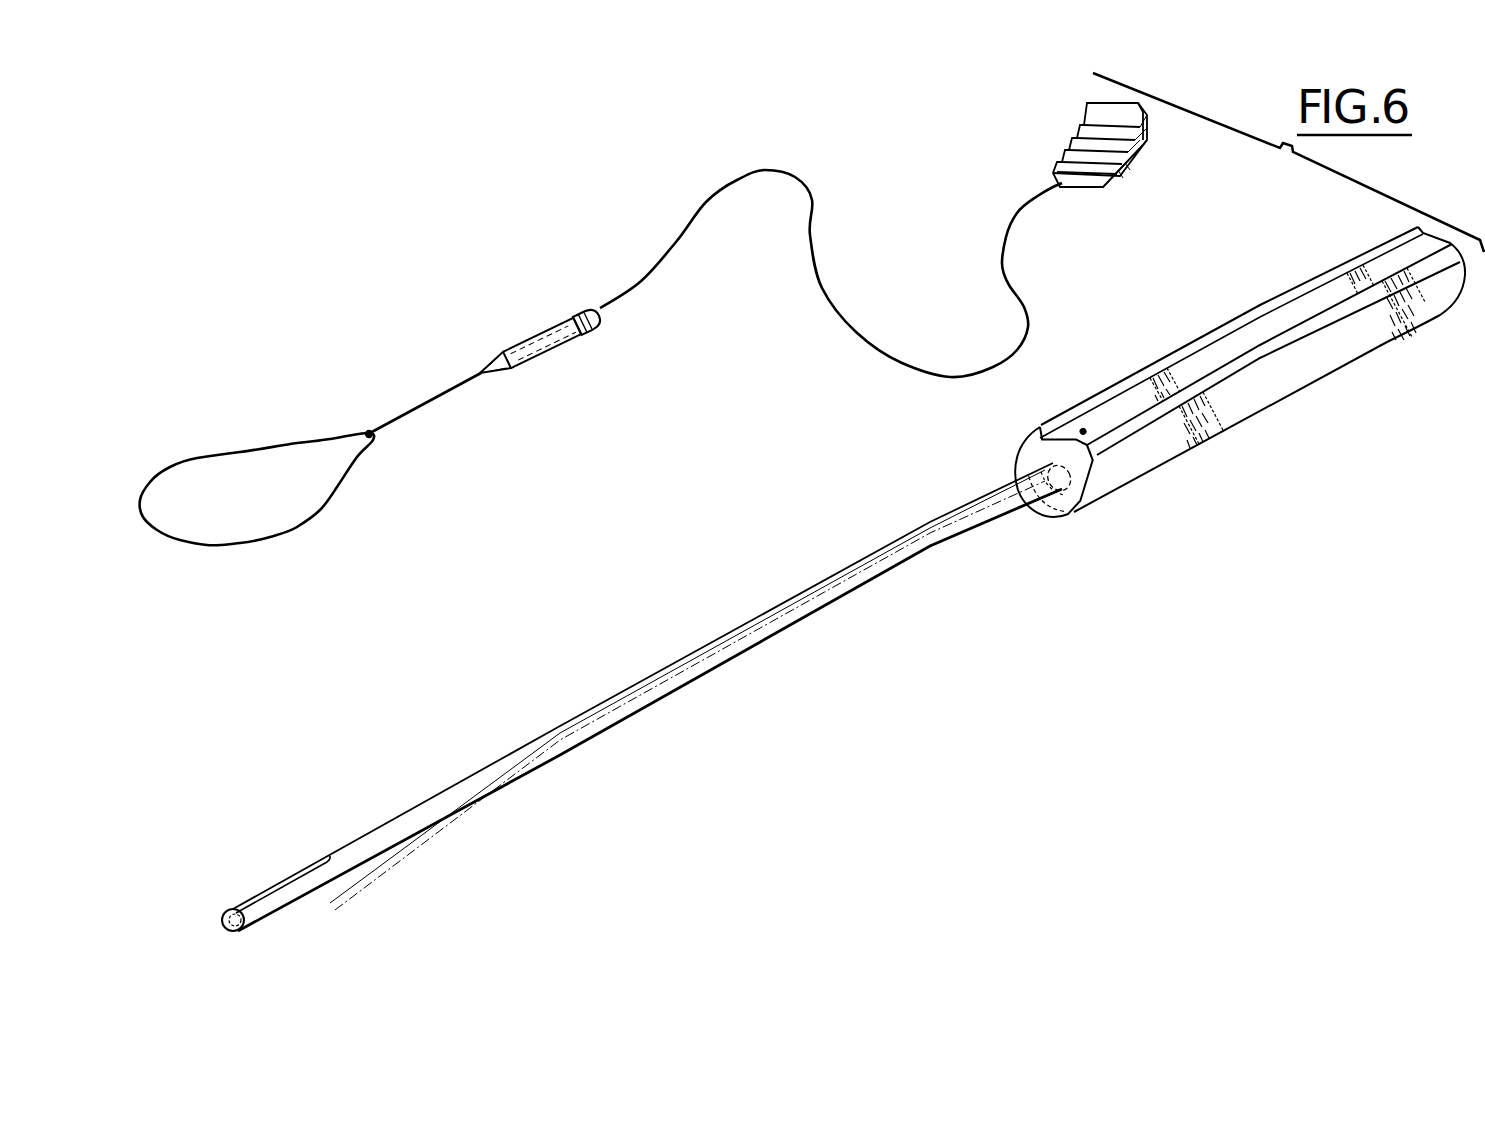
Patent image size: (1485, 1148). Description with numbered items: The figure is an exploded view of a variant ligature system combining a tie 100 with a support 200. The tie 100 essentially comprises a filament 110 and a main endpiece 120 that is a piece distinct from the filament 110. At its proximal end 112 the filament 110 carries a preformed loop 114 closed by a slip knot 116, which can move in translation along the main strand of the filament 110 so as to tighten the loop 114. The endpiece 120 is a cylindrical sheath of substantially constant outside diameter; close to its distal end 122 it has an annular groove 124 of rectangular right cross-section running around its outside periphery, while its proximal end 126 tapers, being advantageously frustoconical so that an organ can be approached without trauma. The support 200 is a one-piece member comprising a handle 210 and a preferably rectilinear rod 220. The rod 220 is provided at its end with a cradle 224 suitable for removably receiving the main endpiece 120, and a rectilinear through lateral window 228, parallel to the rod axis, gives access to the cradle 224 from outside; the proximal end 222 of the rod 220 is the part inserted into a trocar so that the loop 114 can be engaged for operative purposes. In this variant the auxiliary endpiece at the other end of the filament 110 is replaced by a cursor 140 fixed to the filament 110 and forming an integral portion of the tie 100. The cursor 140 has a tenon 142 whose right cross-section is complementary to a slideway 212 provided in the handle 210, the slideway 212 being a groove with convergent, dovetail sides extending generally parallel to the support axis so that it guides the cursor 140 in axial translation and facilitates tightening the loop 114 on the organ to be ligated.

The tie 100 is at (756, 160).
The filament 110 is at (831, 273).
The proximal end of the filament 112 is at (424, 416).
The preformed loop 114 is at (236, 448).
The slip knot 116 is at (367, 428).
The main endpiece 120 is at (507, 321).
The distal end of the endpiece 122 is at (587, 290).
The annular groove 124 is at (602, 340).
The proximal end of the endpiece 126 is at (500, 378).
The cursor 140 is at (1042, 136).
The tenon 142 is at (1088, 190).
The support 200 is at (862, 641).
The handle 210 is at (1143, 455).
The slideway 212 is at (1207, 360).
The rod 220 is at (583, 742).
The proximal end of the support rod 222 is at (335, 902).
The cradle 224 is at (208, 928).
The lateral window 228 is at (250, 882).